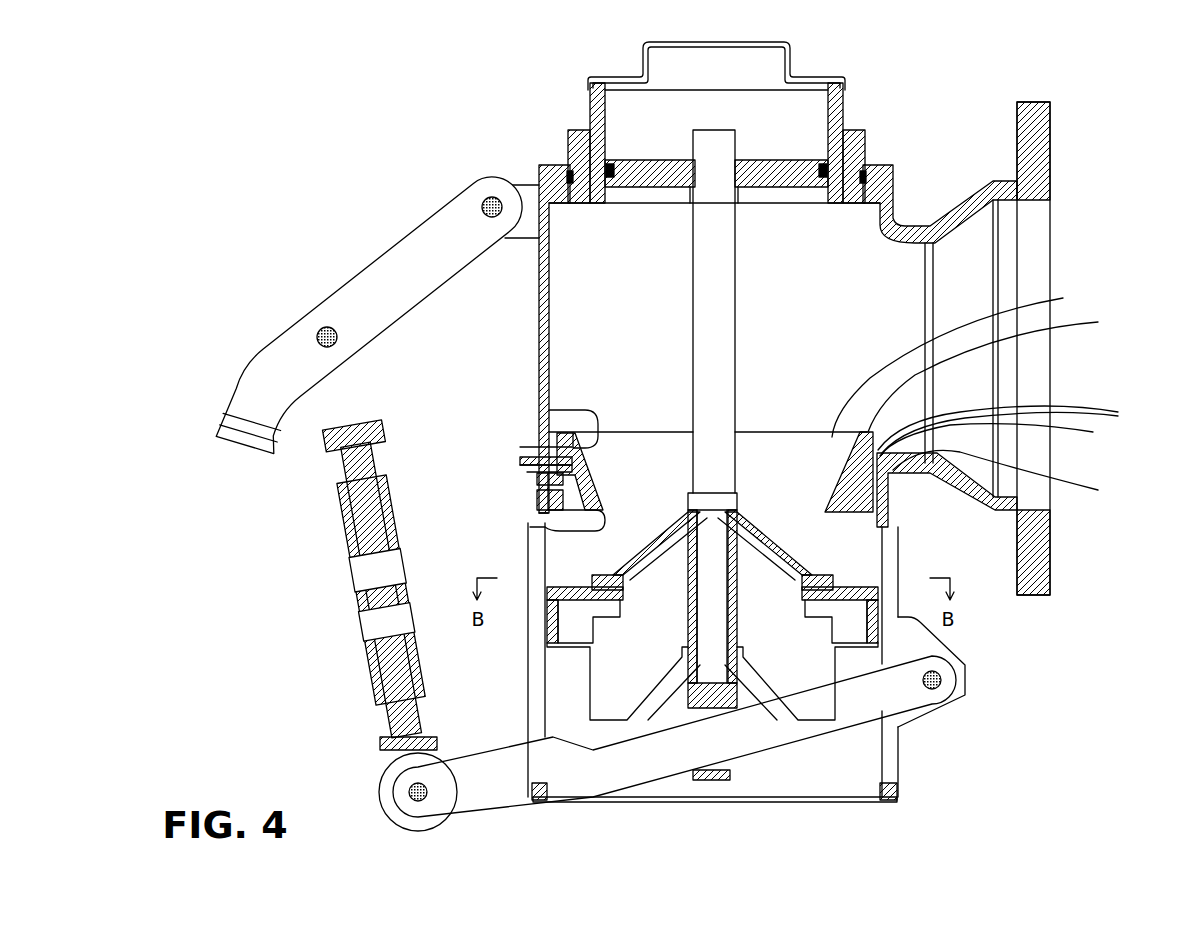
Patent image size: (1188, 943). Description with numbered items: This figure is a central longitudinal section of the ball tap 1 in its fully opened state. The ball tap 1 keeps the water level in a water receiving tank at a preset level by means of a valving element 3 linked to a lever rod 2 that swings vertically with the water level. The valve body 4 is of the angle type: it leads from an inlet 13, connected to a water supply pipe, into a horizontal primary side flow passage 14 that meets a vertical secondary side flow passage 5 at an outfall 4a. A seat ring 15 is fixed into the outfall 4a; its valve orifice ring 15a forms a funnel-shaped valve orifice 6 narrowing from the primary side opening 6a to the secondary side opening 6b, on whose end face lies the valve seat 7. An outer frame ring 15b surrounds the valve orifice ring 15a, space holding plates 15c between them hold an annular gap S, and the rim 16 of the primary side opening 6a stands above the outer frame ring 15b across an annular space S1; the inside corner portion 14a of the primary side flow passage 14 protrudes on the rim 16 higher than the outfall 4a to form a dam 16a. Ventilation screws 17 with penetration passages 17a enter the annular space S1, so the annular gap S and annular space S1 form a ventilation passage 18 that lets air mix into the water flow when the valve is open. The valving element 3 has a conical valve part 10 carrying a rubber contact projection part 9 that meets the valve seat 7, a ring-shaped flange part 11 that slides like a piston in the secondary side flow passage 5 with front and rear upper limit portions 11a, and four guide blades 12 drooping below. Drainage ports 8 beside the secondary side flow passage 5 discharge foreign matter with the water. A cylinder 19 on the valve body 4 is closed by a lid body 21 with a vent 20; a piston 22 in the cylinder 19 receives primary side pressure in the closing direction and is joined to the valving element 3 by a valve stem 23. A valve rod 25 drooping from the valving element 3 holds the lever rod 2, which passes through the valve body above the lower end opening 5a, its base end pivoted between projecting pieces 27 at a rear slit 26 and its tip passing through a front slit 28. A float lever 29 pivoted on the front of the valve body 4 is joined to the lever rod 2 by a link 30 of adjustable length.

The ball tap 1 is at (895, 202).
The lever rod 2 is at (448, 815).
The valving element 3 is at (905, 625).
The valve body 4 is at (538, 313).
The outfall 4a is at (1000, 437).
The secondary side flow passage 5 is at (880, 752).
The lower end opening 5a is at (862, 805).
The valve orifice 6 is at (550, 413).
The primary side opening 6a is at (548, 413).
The secondary side opening 6b is at (530, 528).
The valve seat 7 is at (880, 530).
The drainage ports 8 is at (850, 553).
The contact projection part 9 is at (622, 585).
The valve part 10 is at (618, 575).
The flange part 11 is at (547, 582).
The upper limit portions 11a is at (895, 585).
The guide blades 12 is at (592, 662).
The inlet 13 is at (1033, 277).
The primary side flow passage 14 is at (908, 222).
The inside corner portion 14a is at (885, 462).
The seat ring 15 is at (961, 362).
The valve orifice ring 15a is at (999, 371).
The outer frame ring 15b is at (892, 478).
The space holding plates 15c is at (1013, 474).
The rim 16 is at (1015, 423).
The dam 16a is at (1034, 424).
The ventilation screws 17 is at (520, 455).
The penetration passages 17a is at (520, 463).
The ventilation passage 18 is at (470, 440).
The cylinder 19 is at (578, 148).
The vent 20 is at (643, 63).
The lid body 21 is at (588, 118).
The piston 22 is at (866, 152).
The valve stem 23 is at (693, 278).
The valve rod 25 is at (700, 777).
The rear slit 26 is at (890, 774).
The projecting pieces 27 is at (968, 672).
The front slit 28 is at (530, 717).
The float lever 29 is at (353, 297).
The link 30 is at (350, 645).
The annular gap S is at (537, 505).
The annular space S1 is at (527, 487).